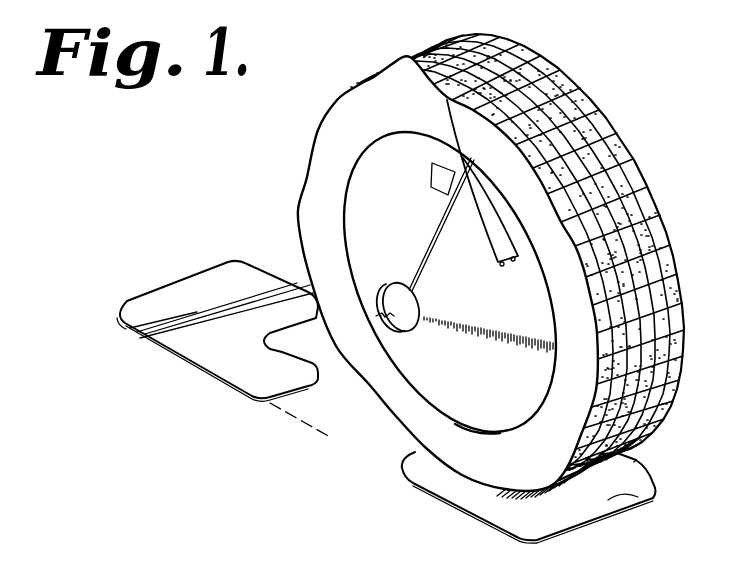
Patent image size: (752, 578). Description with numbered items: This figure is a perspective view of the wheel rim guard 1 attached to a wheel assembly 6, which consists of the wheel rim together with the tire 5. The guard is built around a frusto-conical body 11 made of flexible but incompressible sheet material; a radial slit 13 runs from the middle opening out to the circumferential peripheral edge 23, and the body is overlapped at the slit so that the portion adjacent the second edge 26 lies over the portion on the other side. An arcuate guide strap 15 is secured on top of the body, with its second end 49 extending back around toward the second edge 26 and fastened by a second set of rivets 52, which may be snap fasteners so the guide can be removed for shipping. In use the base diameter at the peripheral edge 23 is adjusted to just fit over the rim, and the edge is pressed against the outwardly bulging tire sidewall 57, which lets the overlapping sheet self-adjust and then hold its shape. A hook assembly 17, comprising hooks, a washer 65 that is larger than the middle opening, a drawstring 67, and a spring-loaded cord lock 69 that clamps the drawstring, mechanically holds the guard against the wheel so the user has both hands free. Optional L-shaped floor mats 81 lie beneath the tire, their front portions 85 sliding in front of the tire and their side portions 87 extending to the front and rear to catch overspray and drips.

The wheel rim guard 1 is at (359, 429).
The tire 5 is at (693, 577).
The wheel assembly 6 is at (303, 75).
The frusto-conical body 11 is at (406, 142).
The radial slit 13 is at (446, 93).
The arcuate guide strap 15 is at (482, 217).
The hook assembly 17 is at (380, 339).
The peripheral edge 23 is at (438, 432).
The second edge 26 is at (424, 266).
The second end of arcuate guide 49 is at (503, 270).
The second set of rivets 52 is at (513, 266).
The tire sidewall 57 is at (335, 152).
The washer 65 is at (392, 298).
The drawstring 67 is at (376, 318).
The cord lock 69 is at (414, 323).
The floor mats 81 is at (125, 314).
The front portions of floor mats 85 is at (243, 369).
The side portions of floor mats 87 is at (645, 500).